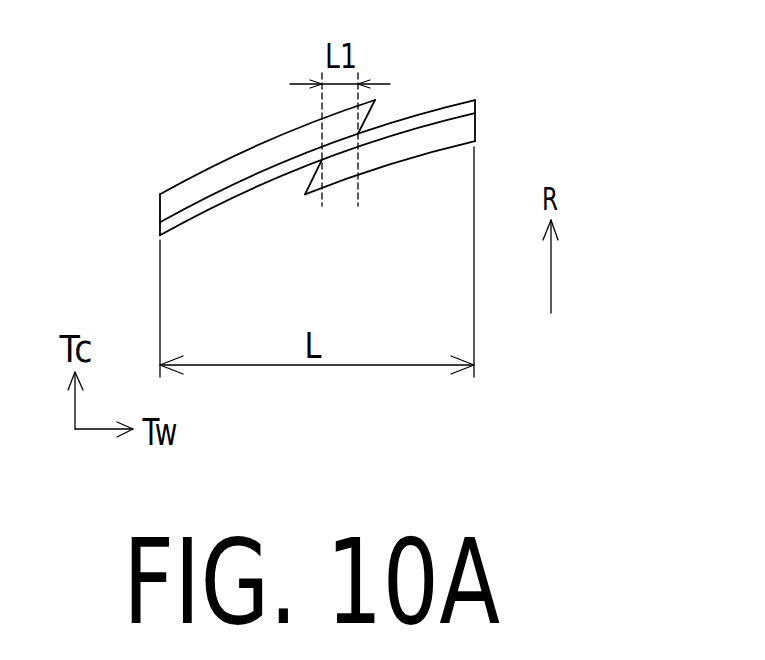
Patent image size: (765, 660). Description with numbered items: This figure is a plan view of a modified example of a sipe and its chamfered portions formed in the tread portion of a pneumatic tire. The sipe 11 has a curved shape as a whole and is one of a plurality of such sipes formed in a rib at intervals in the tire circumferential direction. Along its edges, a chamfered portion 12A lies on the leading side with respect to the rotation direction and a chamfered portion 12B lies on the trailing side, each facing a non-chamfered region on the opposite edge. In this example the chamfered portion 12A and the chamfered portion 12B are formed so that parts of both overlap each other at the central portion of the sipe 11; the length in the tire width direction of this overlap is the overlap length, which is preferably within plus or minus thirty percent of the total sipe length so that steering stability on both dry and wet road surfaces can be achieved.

The sipe 11 is at (330, 153).
The chamfered portion 12A is at (245, 167).
The chamfered portion 12B is at (428, 142).